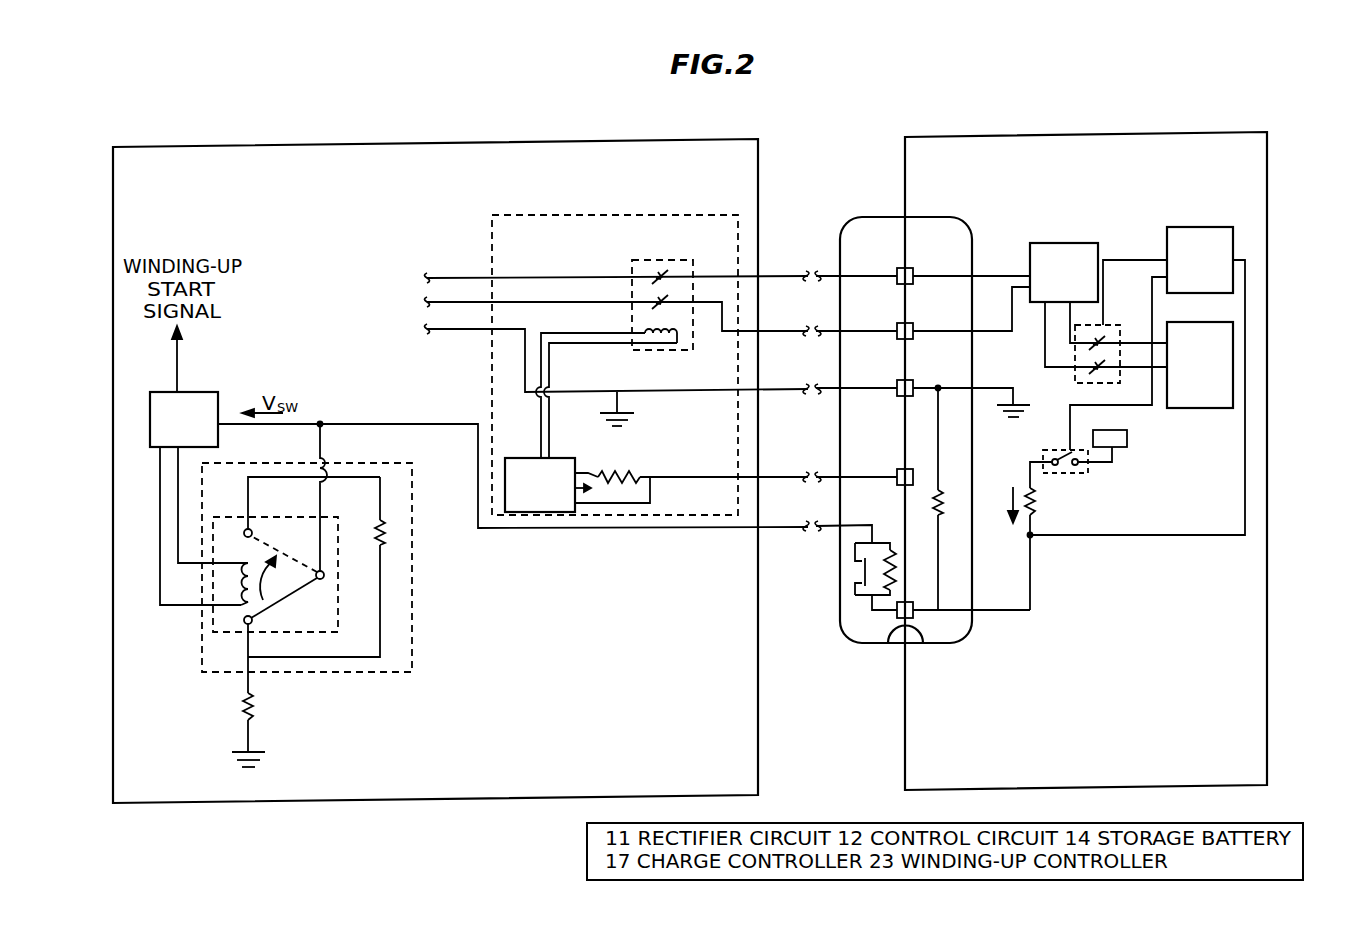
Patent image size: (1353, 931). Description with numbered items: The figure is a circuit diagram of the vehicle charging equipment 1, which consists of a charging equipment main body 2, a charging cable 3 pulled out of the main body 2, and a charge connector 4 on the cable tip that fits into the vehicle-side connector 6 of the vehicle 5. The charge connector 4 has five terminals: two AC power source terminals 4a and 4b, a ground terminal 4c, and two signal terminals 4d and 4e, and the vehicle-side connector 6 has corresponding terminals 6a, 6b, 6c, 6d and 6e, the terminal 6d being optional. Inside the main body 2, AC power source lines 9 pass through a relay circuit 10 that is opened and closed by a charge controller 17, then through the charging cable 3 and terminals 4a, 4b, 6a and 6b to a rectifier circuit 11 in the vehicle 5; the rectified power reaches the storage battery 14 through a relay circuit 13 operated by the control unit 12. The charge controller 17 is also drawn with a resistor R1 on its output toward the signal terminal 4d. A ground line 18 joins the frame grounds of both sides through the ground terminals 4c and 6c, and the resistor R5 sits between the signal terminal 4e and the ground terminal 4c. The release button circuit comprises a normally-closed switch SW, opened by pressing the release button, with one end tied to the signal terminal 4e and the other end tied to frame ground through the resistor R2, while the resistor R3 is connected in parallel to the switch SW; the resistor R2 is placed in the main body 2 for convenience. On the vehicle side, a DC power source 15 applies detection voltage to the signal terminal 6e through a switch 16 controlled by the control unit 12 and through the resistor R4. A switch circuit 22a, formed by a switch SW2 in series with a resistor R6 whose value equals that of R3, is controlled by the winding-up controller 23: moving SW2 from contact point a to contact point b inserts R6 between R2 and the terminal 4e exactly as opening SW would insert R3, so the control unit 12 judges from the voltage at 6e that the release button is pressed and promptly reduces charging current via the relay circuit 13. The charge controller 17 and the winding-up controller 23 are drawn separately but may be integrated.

The vehicle charging equipment 1 is at (216, 139).
The charging equipment main body 2 is at (593, 141).
The charging cable 3 is at (774, 532).
The charge connector 4 is at (845, 218).
The AC power source terminal 4a is at (894, 269).
The AC power source terminal 4b is at (894, 324).
The ground terminal 4c is at (894, 381).
The signal terminal 4d is at (894, 474).
The signal terminal 4e is at (888, 650).
The vehicle 5 is at (1230, 134).
The vehicle-side connector 6 is at (966, 218).
The AC power source terminal 6a is at (915, 269).
The AC power source terminal 6b is at (915, 324).
The ground terminal 6c is at (915, 381).
The signal terminal 6d is at (912, 469).
The signal terminal 6e is at (923, 650).
The AC power source lines 9 is at (452, 312).
The relay circuit 10 is at (669, 261).
The rectifier circuit 11 is at (1062, 243).
The control unit 12 is at (1203, 227).
The relay circuit 13 is at (1075, 383).
The storage battery 14 is at (1208, 409).
The DC power source 15 is at (1128, 438).
The switch 16 is at (1090, 472).
The charge controller 17 is at (538, 516).
The ground line 18 is at (452, 333).
The switch circuit 22a is at (412, 658).
The winding-up controller 23 is at (218, 392).
The resistor R1 is at (691, 478).
The resistor R2 is at (261, 695).
The resistor R3 is at (879, 563).
The resistor R4 is at (1038, 548).
The resistor R5 is at (925, 498).
The resistor R6 is at (316, 567).
The normally-closed switch SW is at (858, 569).
The switch SW2 is at (296, 555).